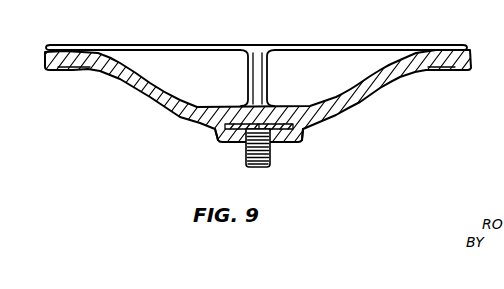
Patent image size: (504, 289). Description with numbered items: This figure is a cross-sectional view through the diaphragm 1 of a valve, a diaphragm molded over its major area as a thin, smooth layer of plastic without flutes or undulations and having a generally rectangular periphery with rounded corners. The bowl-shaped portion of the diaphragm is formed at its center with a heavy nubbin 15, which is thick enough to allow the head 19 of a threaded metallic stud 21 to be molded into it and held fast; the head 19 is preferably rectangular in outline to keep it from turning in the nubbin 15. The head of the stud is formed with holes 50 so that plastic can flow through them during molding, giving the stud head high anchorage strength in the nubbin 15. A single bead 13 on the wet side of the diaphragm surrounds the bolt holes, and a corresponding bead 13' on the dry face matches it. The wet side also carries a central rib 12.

The wheel 1 is at (479, 55).
The central rib 12 is at (268, 78).
The single bead 13 is at (256, 36).
The corresponding bead 13' is at (263, 83).
The nubbin 15 is at (274, 143).
The head 19 is at (296, 129).
The threaded metallic stud 21 is at (245, 158).
The holes 50 is at (285, 124).